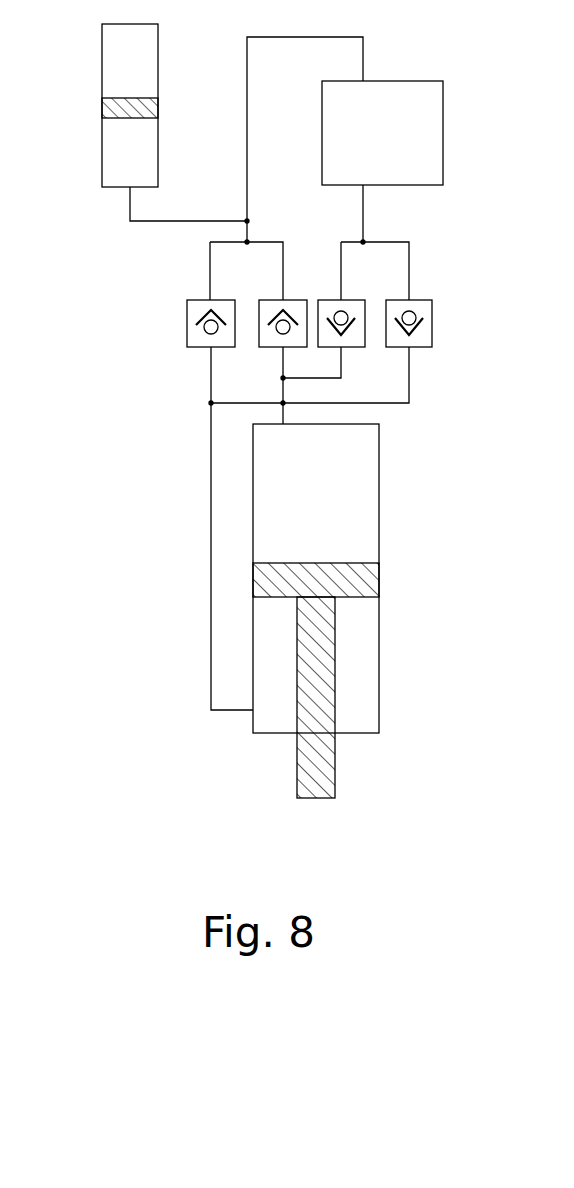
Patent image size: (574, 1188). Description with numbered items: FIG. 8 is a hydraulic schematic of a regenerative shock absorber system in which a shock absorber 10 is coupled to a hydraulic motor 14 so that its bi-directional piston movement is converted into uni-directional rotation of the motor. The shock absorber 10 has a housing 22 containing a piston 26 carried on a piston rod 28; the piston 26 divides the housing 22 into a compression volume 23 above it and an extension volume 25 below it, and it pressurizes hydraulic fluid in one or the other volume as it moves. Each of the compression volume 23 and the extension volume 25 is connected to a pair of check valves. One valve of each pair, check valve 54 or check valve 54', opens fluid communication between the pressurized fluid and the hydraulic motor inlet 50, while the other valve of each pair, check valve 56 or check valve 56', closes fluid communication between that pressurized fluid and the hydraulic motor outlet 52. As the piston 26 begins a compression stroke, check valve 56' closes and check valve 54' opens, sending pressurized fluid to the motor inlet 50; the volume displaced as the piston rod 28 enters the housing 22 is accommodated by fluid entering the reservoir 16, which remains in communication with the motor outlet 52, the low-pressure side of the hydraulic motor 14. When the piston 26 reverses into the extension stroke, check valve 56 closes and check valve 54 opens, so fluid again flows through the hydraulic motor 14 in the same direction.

The shock absorber 10 is at (420, 458).
The hydraulic motor 14 is at (417, 85).
The reservoir 16 is at (108, 70).
The housing 22 is at (381, 497).
The compression volume 23 is at (328, 481).
The extension volume 25 is at (362, 700).
The piston 26 is at (375, 573).
The piston rod 28 is at (328, 640).
The hydraulic motor inlet 50 is at (368, 188).
The hydraulic motor outlet 52 is at (367, 73).
The check valve 54 is at (435, 305).
The check valve 54' is at (395, 346).
The check valve 56 is at (183, 325).
The check valve 56' is at (227, 299).